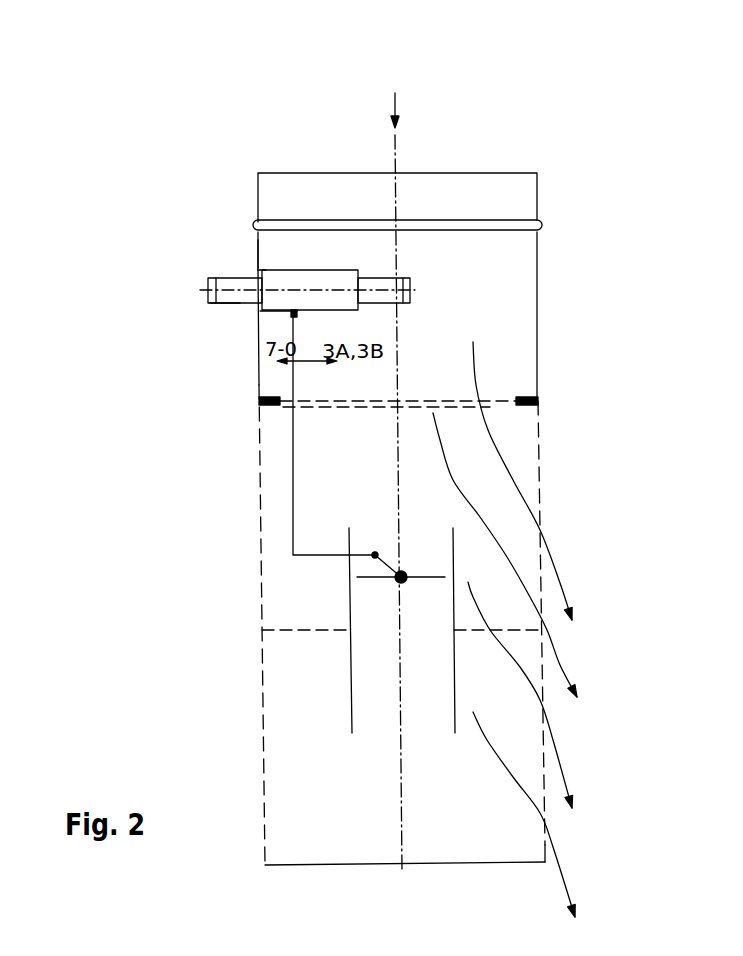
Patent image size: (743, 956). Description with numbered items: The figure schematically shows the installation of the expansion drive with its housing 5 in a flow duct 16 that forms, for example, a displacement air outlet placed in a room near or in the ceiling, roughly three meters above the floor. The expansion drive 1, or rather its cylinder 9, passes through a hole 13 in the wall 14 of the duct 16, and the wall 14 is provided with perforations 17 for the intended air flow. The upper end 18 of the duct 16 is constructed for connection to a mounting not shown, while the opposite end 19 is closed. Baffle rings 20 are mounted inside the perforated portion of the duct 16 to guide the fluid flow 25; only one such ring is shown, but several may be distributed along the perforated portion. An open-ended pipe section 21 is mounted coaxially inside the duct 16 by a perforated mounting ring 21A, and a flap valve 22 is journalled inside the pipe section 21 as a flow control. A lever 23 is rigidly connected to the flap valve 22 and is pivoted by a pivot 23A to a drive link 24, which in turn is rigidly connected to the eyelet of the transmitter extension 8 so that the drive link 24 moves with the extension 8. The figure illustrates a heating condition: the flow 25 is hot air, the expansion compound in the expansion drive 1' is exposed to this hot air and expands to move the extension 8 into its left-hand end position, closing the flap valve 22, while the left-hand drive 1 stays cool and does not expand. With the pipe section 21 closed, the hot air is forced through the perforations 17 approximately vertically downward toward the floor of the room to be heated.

The expansion drive 1 is at (199, 245).
The expansion drive 1' is at (377, 181).
The housing 5 is at (313, 282).
The transmitter extension 8 is at (293, 318).
The cylinder 9 is at (222, 303).
The hole 13 is at (262, 272).
The wall 14 is at (258, 252).
The flow duct 16 is at (558, 273).
The perforations 17 is at (538, 458).
The upper end 18 is at (537, 197).
The opposite end 19 is at (347, 865).
The baffle rings 20 is at (522, 399).
The pipe section 21 is at (455, 607).
The perforated mounting ring 21A is at (290, 630).
The flap valve 22 is at (440, 577).
The lever 23 is at (385, 565).
The pivot 23A is at (375, 555).
The drive link 24 is at (293, 485).
The fluid flow 25 is at (567, 663).